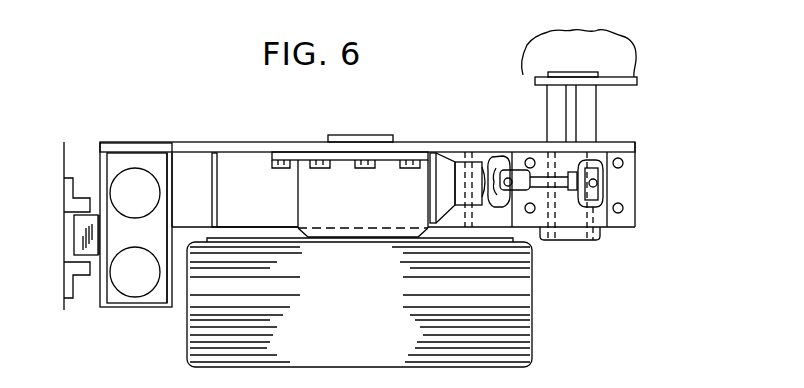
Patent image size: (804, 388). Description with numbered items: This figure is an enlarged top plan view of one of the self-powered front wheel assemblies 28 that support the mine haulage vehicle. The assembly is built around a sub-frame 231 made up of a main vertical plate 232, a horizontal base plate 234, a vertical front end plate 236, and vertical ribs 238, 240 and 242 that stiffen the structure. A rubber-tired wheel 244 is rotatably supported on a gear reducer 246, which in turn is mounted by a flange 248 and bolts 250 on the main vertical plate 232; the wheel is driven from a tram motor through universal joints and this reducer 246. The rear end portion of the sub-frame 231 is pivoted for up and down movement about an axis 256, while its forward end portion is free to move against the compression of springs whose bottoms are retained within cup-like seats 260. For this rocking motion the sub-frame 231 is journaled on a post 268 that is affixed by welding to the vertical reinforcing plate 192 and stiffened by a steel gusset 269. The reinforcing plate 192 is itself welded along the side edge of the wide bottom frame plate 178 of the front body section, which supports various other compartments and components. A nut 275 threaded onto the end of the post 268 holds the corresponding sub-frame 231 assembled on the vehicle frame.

The front wheel assembly 28 is at (99, 138).
The cup-like seat 260 is at (126, 171).
The vertical front end plate 236 is at (101, 292).
The vertical rib 238 is at (172, 177).
The vertical rib 240 is at (217, 165).
The horizontal base plate 234 is at (261, 193).
The main vertical plate 232 is at (307, 147).
The flange 248 is at (345, 150).
The sub-frame 231 is at (404, 139).
The bolts 250 is at (278, 168).
The gear reducer 246 is at (363, 198).
The vertical rib 242 is at (468, 157).
The steel gusset 269 is at (572, 117).
The post 268 is at (587, 124).
The vertical reinforcing plate 192 is at (627, 83).
The bottom frame plate 178 is at (620, 47).
The nut 275 is at (601, 228).
The pivot axis 256 is at (570, 243).
The rubber-tired wheel 244 is at (357, 312).